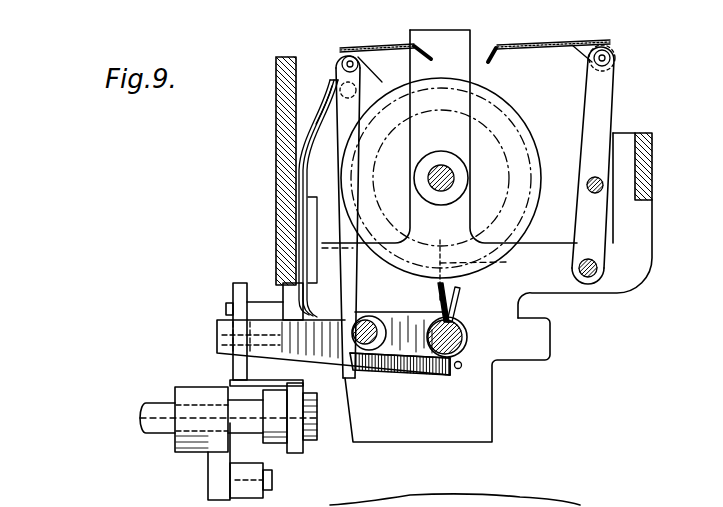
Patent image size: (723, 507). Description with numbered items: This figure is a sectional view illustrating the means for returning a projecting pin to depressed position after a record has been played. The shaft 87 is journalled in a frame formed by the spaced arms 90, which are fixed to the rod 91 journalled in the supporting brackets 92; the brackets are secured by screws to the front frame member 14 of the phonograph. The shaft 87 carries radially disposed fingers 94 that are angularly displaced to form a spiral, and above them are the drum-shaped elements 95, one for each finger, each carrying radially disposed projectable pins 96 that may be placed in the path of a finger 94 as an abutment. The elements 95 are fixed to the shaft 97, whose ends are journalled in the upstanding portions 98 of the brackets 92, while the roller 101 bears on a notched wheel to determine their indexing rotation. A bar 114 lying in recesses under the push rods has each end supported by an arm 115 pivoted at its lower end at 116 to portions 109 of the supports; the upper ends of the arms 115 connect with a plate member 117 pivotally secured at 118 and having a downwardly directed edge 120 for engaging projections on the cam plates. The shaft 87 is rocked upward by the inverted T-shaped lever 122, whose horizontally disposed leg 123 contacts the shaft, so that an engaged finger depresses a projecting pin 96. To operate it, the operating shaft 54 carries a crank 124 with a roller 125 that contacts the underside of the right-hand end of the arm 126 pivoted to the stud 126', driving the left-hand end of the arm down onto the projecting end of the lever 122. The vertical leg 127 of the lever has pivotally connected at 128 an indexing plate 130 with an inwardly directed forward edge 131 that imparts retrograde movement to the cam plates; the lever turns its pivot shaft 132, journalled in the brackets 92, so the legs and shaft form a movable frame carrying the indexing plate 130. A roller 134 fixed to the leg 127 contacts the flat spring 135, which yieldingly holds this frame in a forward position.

The front frame member 14 is at (280, 128).
The operating shaft 54 is at (150, 410).
The shaft 87 is at (466, 336).
The spaced arms 90 is at (418, 372).
The rod 91 is at (370, 326).
The supporting brackets 92 is at (318, 256).
The fingers 94 is at (460, 296).
The elements 95 is at (528, 152).
The projectable pins 96 is at (498, 262).
The shaft 97 is at (446, 174).
The upstanding portions 98 is at (472, 80).
The roller 101 is at (654, 163).
The portions of the supports 109 is at (652, 256).
The bar 114 is at (602, 188).
The arms 115 is at (605, 112).
The pivot 116 is at (594, 274).
The plate member 117 is at (548, 42).
The pivot 118 is at (612, 58).
The downwardly directed edge 120 is at (490, 46).
The inverted T-shaped lever 122 is at (332, 302).
The horizontally disposed leg 123 is at (455, 372).
The crank 124 is at (208, 466).
The roller 125 is at (264, 478).
The arm 126 is at (231, 334).
The stud 126' is at (202, 296).
The vertical leg 127 is at (336, 156).
The pivot 128 is at (342, 58).
The indexing plate 130 is at (376, 46).
The inwardly directed forward edge 131 is at (430, 56).
The pivot shaft 132 is at (360, 375).
The roller 134 is at (362, 104).
The flat spring 135 is at (300, 110).